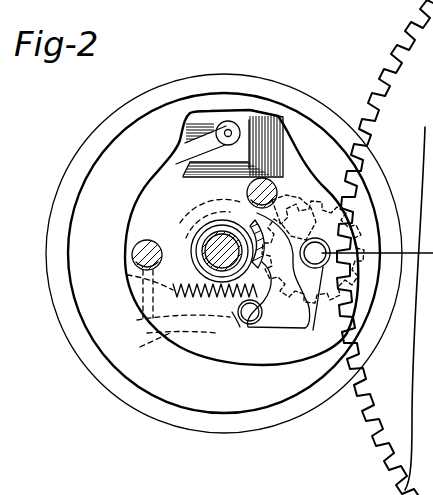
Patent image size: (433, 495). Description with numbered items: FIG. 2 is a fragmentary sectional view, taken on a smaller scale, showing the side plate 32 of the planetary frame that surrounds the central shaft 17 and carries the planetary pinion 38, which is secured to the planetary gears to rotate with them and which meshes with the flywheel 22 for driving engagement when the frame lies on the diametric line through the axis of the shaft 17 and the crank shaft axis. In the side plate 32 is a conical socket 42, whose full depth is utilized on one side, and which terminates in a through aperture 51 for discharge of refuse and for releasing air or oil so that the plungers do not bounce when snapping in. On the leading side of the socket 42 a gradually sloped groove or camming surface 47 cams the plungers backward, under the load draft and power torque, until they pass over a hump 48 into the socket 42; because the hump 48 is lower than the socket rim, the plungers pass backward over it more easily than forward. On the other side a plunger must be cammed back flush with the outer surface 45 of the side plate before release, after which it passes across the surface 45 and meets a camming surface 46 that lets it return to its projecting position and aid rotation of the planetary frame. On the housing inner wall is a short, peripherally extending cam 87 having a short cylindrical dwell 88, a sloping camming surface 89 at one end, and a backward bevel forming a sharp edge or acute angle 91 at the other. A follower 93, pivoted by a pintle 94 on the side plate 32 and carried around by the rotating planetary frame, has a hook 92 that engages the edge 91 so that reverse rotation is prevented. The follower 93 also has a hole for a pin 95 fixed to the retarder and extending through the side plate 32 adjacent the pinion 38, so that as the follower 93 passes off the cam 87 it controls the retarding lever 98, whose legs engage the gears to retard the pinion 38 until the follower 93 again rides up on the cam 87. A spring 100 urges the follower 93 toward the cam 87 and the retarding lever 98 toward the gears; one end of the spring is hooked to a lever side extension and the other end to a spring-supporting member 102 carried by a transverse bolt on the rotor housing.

The shaft 17 is at (206, 244).
The flywheel 22 is at (383, 247).
The side plate 32 is at (240, 352).
The planetary pinion 38 is at (294, 217).
The socket 42 is at (238, 122).
The outer surface 45 is at (249, 121).
The camming surface 46 is at (268, 128).
The camming surface 47 is at (190, 147).
The hump 48 is at (221, 124).
The through aperture 51 is at (228, 137).
The cam 87 is at (261, 226).
The cylindrical dwell 88 is at (247, 222).
The sloping camming surface 89 is at (269, 313).
The sharp edge 91 is at (210, 200).
The hook 92 is at (352, 215).
The follower 93 is at (346, 270).
The pintle 94 is at (241, 330).
The pin 95 is at (307, 328).
The retarding lever 98 is at (154, 338).
The spring 100 is at (127, 275).
The spring-supporting member 102 is at (137, 304).